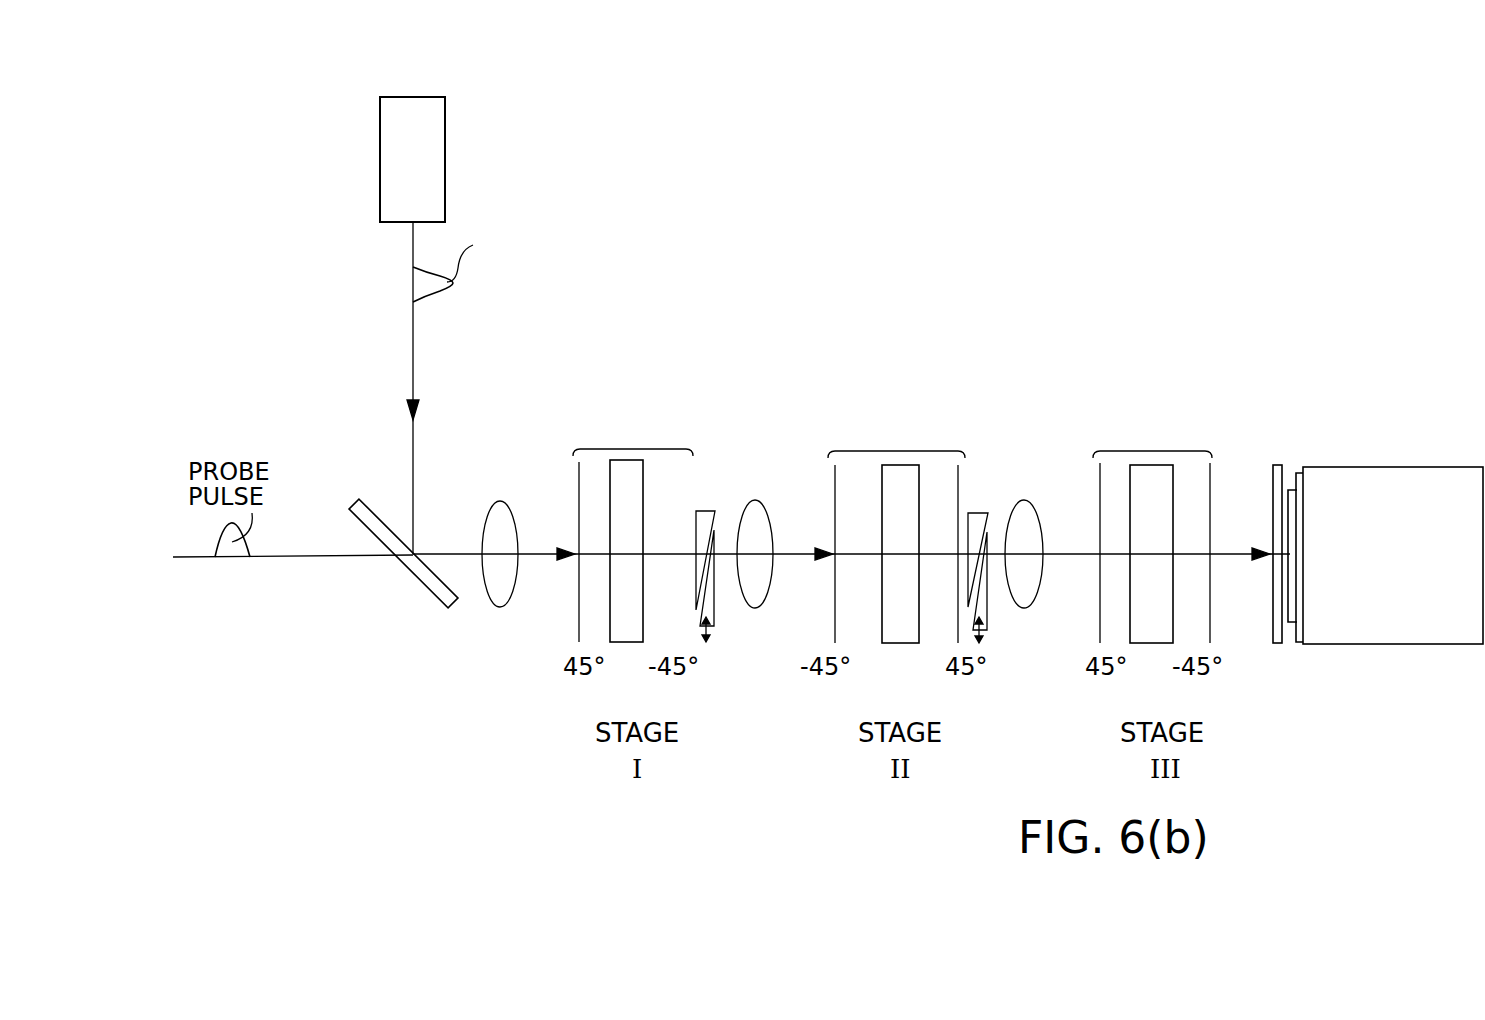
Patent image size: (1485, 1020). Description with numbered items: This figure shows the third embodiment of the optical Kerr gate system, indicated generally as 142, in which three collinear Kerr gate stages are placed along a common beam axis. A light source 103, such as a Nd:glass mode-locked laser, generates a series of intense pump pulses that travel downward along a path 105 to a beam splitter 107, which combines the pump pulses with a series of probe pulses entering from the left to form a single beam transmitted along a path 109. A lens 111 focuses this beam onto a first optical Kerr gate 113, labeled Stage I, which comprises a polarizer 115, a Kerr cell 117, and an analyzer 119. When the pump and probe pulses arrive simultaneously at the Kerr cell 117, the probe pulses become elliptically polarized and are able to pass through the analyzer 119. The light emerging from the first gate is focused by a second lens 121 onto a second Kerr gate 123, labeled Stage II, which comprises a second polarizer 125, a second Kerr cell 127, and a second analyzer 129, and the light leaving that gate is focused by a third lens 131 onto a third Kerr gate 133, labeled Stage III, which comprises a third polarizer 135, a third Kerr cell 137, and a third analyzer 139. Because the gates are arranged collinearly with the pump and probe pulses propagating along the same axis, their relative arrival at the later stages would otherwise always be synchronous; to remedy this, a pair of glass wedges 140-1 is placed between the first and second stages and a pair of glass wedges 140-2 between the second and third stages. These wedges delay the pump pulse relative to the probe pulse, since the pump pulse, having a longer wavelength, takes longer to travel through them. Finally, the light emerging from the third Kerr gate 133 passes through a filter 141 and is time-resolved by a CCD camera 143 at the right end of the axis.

The light source 103 is at (438, 167).
The path 105 is at (413, 362).
The beam splitter 107 is at (373, 518).
The path 109 is at (445, 548).
The lens 111 is at (503, 587).
The first optical Kerr gate 113 is at (637, 449).
The polarizer 115 is at (577, 512).
The Kerr cell 117 is at (626, 642).
The analyzer 119 is at (688, 487).
The second lens 121 is at (760, 585).
The second Kerr gate 123 is at (898, 451).
The second polarizer 125 is at (833, 498).
The second Kerr cell 127 is at (900, 643).
The second analyzer 129 is at (960, 495).
The third lens 131 is at (1027, 597).
The third Kerr gate 133 is at (1148, 451).
The third polarizer 135 is at (1098, 487).
The third Kerr cell 137 is at (1152, 643).
The third analyzer 139 is at (1212, 497).
The pair of glass wedges 140-1 is at (782, 493).
The pair of glass wedges 140-2 is at (1083, 665).
The filter 141 is at (1282, 645).
The measurement system 142 is at (1000, 324).
The CCD camera 143 is at (1410, 573).